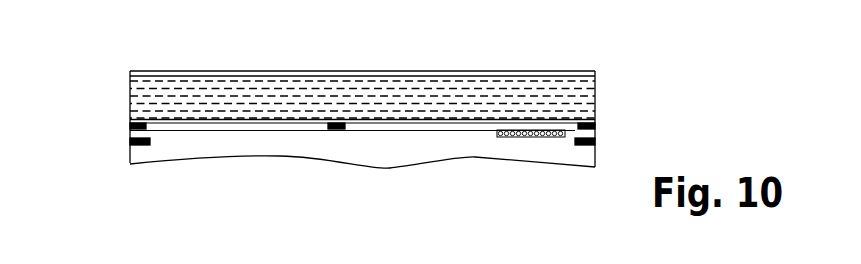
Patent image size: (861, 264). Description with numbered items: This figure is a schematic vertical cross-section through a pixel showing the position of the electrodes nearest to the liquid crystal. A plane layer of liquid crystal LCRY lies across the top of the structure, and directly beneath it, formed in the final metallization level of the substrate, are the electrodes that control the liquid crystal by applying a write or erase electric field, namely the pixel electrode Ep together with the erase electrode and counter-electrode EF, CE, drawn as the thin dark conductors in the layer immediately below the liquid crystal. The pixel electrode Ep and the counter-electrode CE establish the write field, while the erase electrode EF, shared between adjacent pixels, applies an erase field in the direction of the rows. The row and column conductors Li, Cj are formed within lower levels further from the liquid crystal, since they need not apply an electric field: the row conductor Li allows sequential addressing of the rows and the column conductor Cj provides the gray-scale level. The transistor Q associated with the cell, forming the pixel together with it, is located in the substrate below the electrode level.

The liquid crystal layer LCRY is at (530, 87).
The electrode / common electrode EF, CE is at (130, 125).
The line i / column j electrode Li, Cj is at (140, 145).
The pixel electrode Ep is at (337, 130).
The transistor Q is at (521, 137).